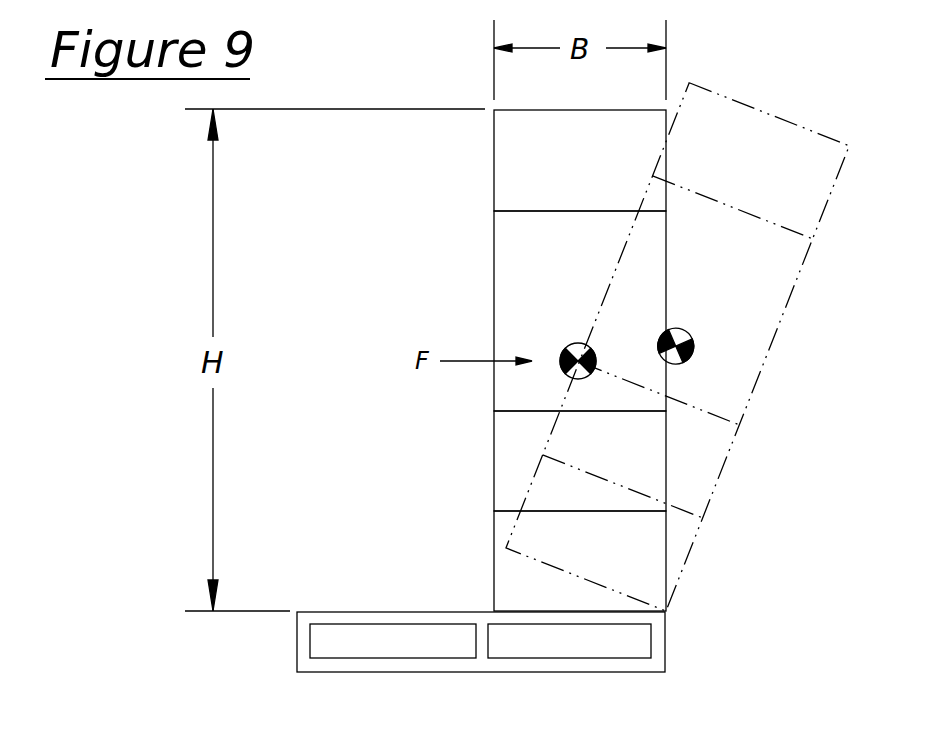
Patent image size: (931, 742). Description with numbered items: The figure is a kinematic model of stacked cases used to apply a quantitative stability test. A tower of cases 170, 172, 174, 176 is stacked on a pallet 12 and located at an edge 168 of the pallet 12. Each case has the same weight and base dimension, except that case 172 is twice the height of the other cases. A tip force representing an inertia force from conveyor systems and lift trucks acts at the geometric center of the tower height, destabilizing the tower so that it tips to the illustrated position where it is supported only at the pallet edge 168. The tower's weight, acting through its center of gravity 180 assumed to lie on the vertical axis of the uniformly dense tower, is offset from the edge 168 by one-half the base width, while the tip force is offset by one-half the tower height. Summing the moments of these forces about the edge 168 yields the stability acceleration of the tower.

The pallet 12 is at (325, 611).
The edge 168 is at (668, 611).
The case 170 is at (512, 176).
The case 172 is at (512, 268).
The case 174 is at (513, 474).
The case 176 is at (512, 583).
The center of gravity 180 is at (566, 375).